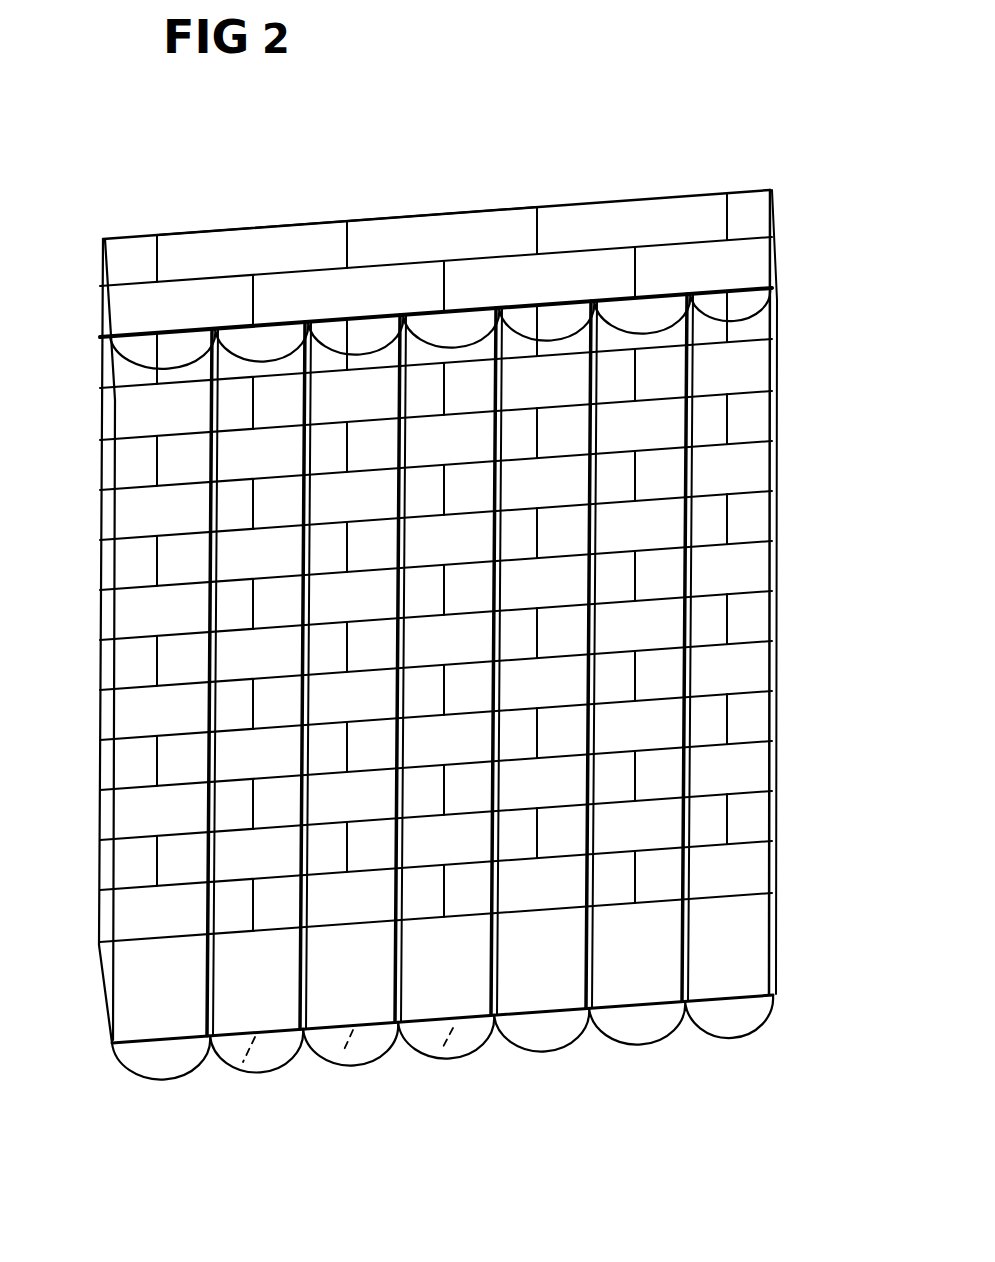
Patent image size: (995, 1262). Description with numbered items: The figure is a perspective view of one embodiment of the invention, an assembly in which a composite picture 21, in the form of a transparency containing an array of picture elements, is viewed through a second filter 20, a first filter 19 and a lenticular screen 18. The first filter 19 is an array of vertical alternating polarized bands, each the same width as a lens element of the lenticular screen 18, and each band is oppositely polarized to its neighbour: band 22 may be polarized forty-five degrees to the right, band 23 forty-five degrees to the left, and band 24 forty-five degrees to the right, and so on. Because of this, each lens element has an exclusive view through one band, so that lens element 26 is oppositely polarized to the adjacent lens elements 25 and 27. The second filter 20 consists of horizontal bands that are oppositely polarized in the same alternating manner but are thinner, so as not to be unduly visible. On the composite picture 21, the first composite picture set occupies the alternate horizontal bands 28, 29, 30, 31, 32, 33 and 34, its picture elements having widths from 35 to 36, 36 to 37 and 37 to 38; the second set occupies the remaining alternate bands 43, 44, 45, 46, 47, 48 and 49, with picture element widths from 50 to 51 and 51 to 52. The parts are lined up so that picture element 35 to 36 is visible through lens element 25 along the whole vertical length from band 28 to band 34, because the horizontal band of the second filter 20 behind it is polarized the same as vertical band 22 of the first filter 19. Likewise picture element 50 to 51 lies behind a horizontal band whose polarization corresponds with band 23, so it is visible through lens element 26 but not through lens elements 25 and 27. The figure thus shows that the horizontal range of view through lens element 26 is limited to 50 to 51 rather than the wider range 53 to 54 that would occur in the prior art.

The lenticular screen 18 is at (780, 975).
The first filter 19 is at (118, 335).
The second filter 20 is at (770, 189).
The composite picture 21 is at (766, 187).
The vertical polarized band 22 is at (237, 1070).
The vertical polarized band 23 is at (333, 1064).
The vertical polarized band 24 is at (437, 1058).
The lens element 25 is at (263, 1072).
The lens element 26 is at (353, 1064).
The lens element 27 is at (467, 1058).
The alternate band of first composite picture set 28 is at (100, 267).
The alternate band of first composite picture set 29 is at (100, 366).
The alternate band of first composite picture set 30 is at (100, 467).
The alternate band of first composite picture set 31 is at (100, 567).
The alternate band of first composite picture set 32 is at (100, 667).
The alternate band of first composite picture set 33 is at (100, 767).
The alternate band of first composite picture set 34 is at (100, 867).
The picture element boundary 35 is at (157, 232).
The picture element boundary 36 is at (346, 220).
The picture element boundary 37 is at (538, 206).
The picture element boundary 38 is at (724, 190).
The alternate band of second composite picture set 43 is at (776, 263).
The alternate band of second composite picture set 44 is at (776, 363).
The alternate band of second composite picture set 45 is at (776, 463).
The alternate band of second composite picture set 46 is at (776, 563).
The alternate band of second composite picture set 47 is at (776, 663).
The alternate band of second composite picture set 48 is at (776, 763).
The alternate band of second composite picture set 49 is at (776, 863).
The picture element boundary 50 is at (255, 275).
The picture element boundary 51 is at (446, 262).
The picture element boundary 52 is at (635, 248).
The prior art view boundary 53 is at (300, 223).
The prior art view boundary 54 is at (395, 216).